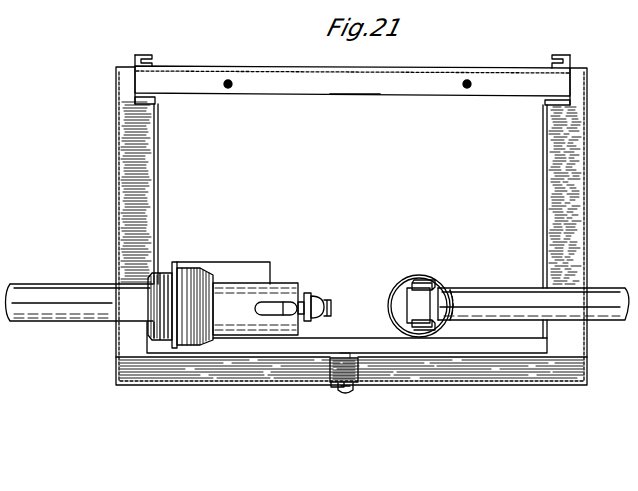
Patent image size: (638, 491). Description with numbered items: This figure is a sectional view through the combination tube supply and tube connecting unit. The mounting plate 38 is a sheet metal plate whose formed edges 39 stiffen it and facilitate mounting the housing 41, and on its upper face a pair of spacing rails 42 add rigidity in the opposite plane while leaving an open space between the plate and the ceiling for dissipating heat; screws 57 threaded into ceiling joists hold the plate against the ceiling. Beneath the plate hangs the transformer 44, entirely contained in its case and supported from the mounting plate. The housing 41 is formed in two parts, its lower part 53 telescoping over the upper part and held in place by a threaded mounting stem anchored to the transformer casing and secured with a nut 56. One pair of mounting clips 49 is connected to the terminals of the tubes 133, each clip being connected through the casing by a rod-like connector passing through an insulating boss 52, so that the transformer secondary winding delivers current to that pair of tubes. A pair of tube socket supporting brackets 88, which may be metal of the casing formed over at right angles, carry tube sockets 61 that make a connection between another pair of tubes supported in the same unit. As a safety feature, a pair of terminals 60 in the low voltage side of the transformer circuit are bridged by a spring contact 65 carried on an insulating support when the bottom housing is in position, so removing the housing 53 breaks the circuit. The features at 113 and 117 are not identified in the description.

The plate 38 is at (276, 67).
The formed edges 39 is at (135, 100).
The housing 41 is at (126, 183).
The spacing rails 42 is at (152, 55).
The transformer 44 is at (372, 216).
The mounting clips 49 is at (420, 282).
The insulating boss 52 is at (405, 285).
The lower part of housing 53 is at (118, 385).
The nut 56 is at (350, 393).
The screws 57 is at (0, 150).
The terminals 60 is at (346, 353).
The tube sockets 61 is at (245, 273).
The spring contact 65 is at (328, 384).
The tube socket supporting brackets 88 is at (178, 263).
The opening 113 is at (352, 95).
The hole 117 is at (229, 90).
The tubes 133 is at (50, 286).